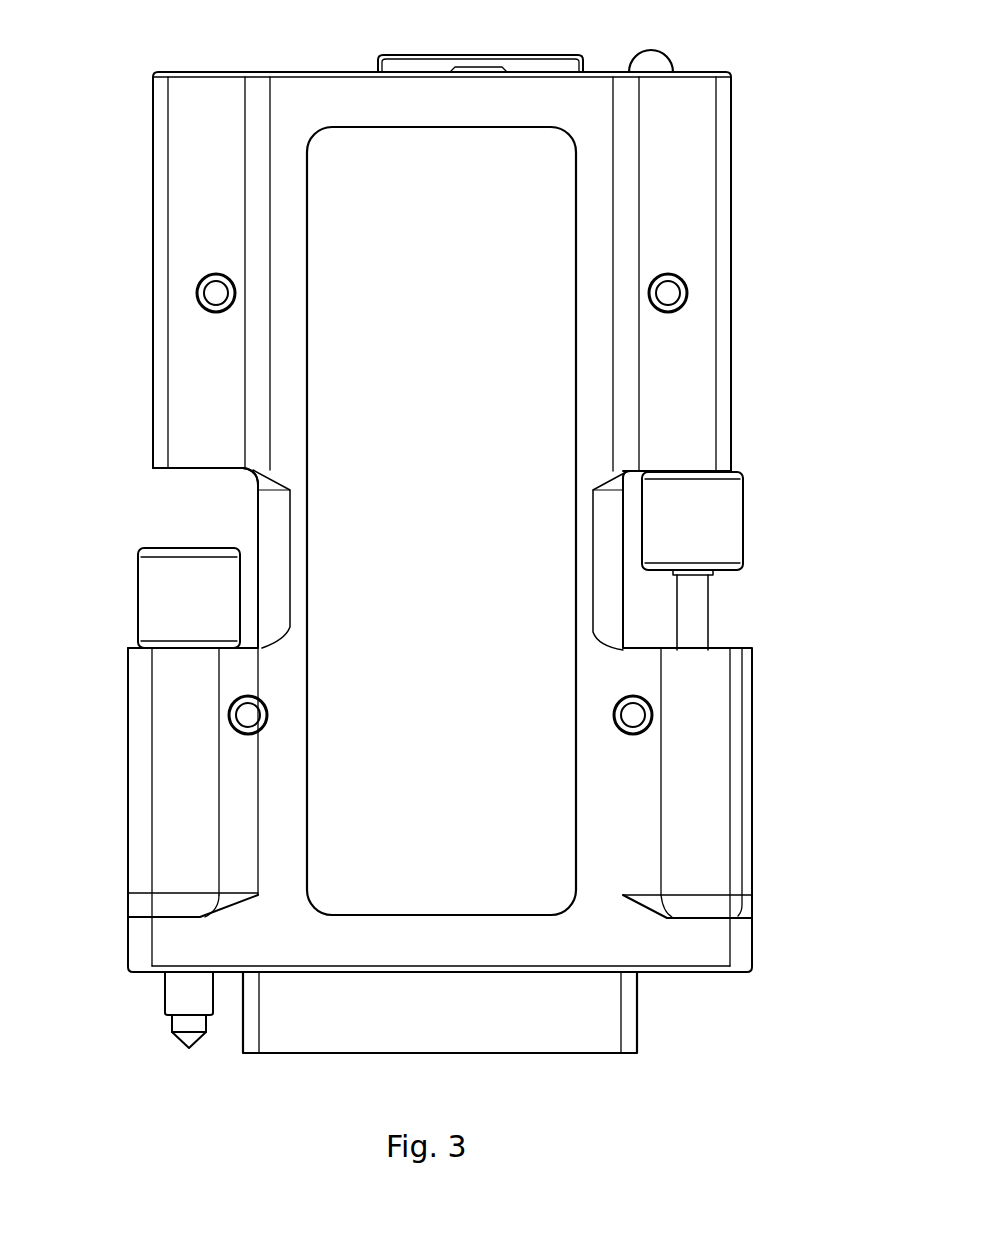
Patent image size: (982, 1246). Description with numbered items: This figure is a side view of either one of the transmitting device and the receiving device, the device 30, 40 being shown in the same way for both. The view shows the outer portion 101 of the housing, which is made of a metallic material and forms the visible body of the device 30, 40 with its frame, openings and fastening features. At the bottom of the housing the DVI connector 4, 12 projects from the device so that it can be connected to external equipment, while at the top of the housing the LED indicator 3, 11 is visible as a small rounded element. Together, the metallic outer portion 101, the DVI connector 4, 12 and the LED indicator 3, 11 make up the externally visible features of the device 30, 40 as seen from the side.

The LED indicator 3 is at (736, 46).
The LED indicator 11 is at (665, 45).
The outer portion of the housing 101 is at (675, 203).
The transmitting device 30 is at (147, 557).
The receiving device 40 is at (187, 470).
The DVI connector 4 is at (554, 1022).
The DVI connector 12 is at (638, 1023).